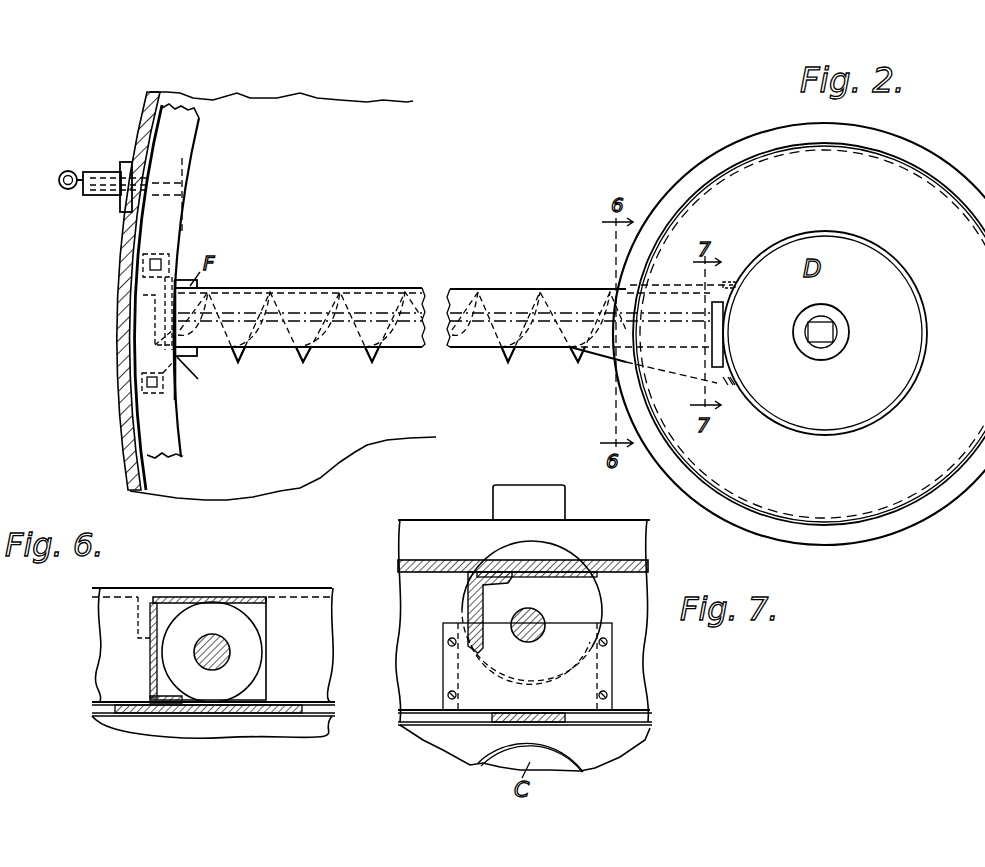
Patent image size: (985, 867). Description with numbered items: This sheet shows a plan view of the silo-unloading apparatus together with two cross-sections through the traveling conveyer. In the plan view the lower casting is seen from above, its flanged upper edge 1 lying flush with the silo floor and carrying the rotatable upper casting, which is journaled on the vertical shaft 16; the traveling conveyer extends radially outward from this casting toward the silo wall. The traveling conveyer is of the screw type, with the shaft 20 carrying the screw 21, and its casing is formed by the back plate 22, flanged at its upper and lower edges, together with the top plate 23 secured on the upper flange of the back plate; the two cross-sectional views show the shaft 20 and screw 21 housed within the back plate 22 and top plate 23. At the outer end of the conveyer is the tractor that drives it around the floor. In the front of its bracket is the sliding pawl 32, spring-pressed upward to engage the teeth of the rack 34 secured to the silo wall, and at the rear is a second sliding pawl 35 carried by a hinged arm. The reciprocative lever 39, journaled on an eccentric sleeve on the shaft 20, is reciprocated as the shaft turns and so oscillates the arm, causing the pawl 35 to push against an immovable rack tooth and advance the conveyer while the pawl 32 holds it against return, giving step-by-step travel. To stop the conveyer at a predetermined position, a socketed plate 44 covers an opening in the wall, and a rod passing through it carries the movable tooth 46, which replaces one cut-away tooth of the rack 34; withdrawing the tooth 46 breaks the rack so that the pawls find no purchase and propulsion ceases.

In FIG. 2, the flanged upper edge 1 is at (714, 158).
In FIG. 2, the vertical shaft 16 is at (838, 331).
In FIG. 6, the shaft 20 is at (228, 658).
In FIG. 7, the shaft 20 is at (530, 643).
In FIG. 2, the screw 21 is at (517, 357).
In FIG. 6, the screw 21 is at (252, 640).
In FIG. 6, the back plate 22 is at (150, 655).
In FIG. 7, the back plate 22 is at (470, 635).
In FIG. 2, the top plate 23 is at (342, 340).
In FIG. 6, the top plate 23 is at (202, 600).
In FIG. 7, the top plate 23 is at (541, 572).
In FIG. 2, the sliding pawl 32 is at (150, 384).
In FIG. 2, the rack 34 is at (175, 234).
In FIG. 2, the sliding pawl 35 is at (152, 263).
In FIG. 2, the reciprocative lever 39 is at (150, 293).
In FIG. 2, the socketed plate 44 is at (127, 165).
In FIG. 2, the tooth 46 is at (158, 186).